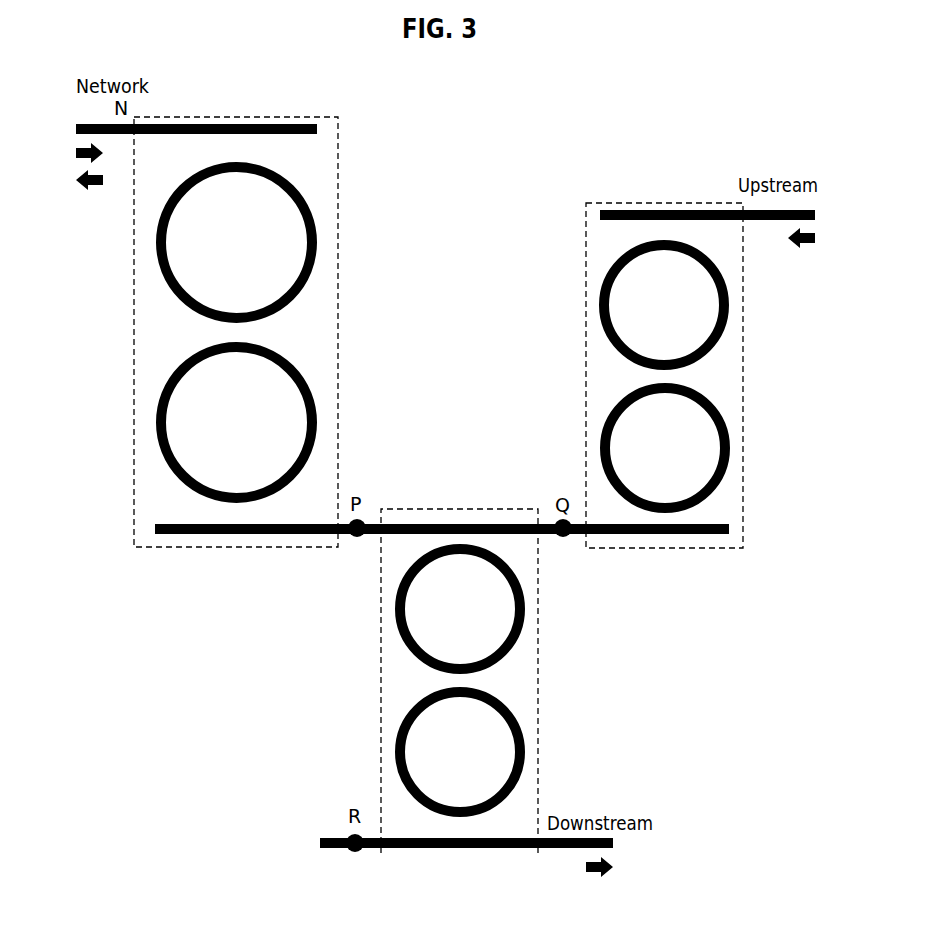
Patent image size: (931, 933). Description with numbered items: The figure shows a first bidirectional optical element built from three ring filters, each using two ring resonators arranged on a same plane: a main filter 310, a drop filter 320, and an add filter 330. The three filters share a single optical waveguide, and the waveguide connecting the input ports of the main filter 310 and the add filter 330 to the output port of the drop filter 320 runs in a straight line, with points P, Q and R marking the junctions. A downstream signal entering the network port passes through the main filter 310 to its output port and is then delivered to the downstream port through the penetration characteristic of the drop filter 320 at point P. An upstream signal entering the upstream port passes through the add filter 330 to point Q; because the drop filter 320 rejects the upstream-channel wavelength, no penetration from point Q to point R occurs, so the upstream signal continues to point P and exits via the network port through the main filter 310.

The main filter 310 is at (235, 117).
The drop filter 320 is at (458, 509).
The add filter 330 is at (665, 203).